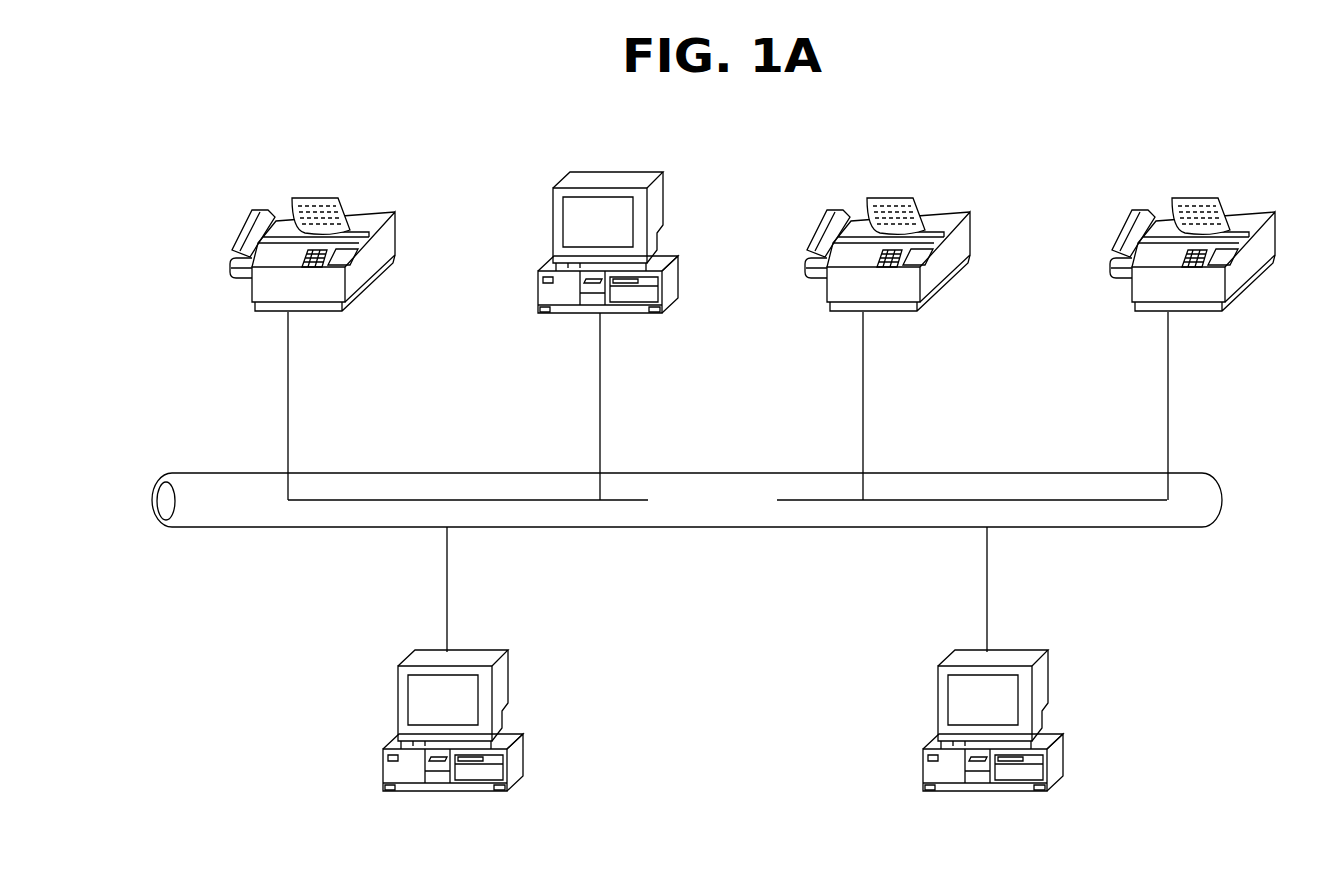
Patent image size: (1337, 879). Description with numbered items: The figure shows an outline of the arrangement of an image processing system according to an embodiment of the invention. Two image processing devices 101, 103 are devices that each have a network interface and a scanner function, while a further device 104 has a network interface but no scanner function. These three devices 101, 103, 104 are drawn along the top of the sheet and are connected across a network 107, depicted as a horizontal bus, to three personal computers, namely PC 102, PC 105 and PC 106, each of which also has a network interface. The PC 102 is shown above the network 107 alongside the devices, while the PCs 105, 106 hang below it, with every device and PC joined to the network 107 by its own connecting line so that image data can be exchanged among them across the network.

The image processing device 101 is at (380, 214).
The PC 102 is at (610, 182).
The image processing device 103 is at (954, 214).
The device 104 is at (1259, 214).
The PC 105 is at (485, 662).
The PC 106 is at (1025, 662).
The network 107 is at (740, 472).